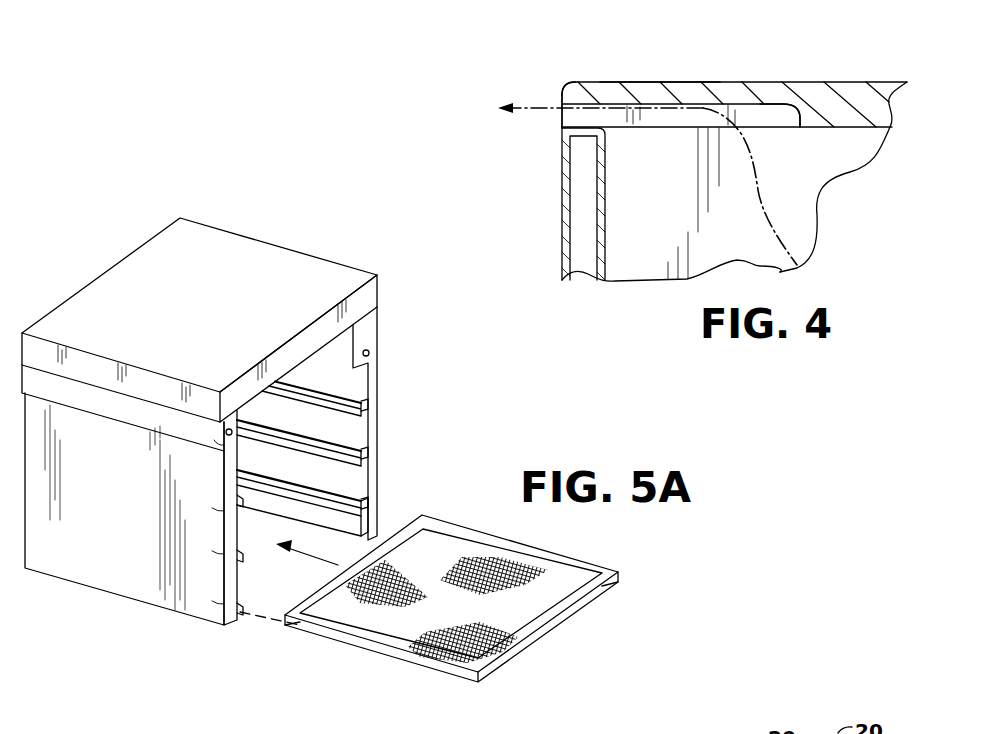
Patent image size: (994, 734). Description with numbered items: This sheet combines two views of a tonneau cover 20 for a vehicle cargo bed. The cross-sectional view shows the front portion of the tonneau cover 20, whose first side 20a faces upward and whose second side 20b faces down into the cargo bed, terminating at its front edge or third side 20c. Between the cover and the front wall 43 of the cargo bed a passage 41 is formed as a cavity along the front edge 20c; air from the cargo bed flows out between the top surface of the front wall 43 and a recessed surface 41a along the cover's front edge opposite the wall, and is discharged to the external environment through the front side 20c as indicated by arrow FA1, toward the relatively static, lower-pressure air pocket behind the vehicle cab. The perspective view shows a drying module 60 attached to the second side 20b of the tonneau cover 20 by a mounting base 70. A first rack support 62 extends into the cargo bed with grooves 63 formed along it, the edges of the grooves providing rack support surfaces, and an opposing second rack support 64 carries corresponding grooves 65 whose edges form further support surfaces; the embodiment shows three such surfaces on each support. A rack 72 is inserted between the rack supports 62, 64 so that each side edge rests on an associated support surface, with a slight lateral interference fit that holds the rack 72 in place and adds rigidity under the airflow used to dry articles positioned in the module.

In FIG. 4, the tonneau cover 20 is at (833, 101).
In FIG. 4, the first side 20a is at (661, 82).
In FIG. 4, the second side 20b is at (843, 127).
In FIG. 4, the third side 20c is at (562, 84).
In FIG. 4, the passage 41 is at (577, 118).
In FIG. 4, the recessed surface 41a is at (754, 103).
In FIG. 4, the front wall 43 is at (560, 207).
In FIG. 4, the arrow FA1 is at (537, 108).
In FIG. 5A, the drying module 60 is at (398, 332).
In FIG. 5A, the first rack support 62 is at (122, 563).
In FIG. 5A, the grooves 63 is at (232, 558).
In FIG. 5A, the second rack support 64 is at (378, 377).
In FIG. 5A, the grooves 65 is at (375, 505).
In FIG. 5A, the mounting base 70 is at (316, 275).
In FIG. 5A, the rack 72 is at (518, 620).